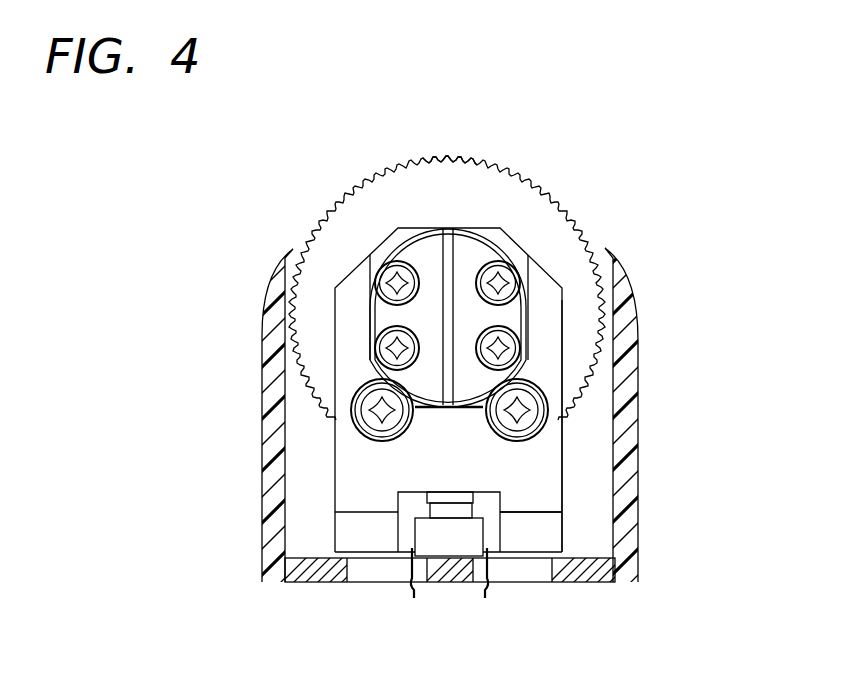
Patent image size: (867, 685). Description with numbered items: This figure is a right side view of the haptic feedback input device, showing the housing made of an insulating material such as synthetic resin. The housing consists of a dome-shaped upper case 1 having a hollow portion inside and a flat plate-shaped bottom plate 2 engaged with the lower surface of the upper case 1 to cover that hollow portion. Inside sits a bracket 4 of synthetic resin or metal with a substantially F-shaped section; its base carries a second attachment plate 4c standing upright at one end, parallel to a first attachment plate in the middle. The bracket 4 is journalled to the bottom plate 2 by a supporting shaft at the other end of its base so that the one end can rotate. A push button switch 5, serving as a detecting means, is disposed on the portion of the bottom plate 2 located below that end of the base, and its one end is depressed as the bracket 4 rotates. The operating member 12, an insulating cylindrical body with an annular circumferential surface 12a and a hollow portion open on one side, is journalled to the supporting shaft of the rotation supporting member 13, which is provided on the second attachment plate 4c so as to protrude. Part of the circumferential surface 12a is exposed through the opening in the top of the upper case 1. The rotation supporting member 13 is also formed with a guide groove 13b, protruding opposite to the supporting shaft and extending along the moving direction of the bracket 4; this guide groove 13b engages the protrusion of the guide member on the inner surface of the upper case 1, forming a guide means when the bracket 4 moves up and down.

The upper case 1 is at (264, 464).
The bottom plate 2 is at (335, 584).
The bracket 4 is at (332, 499).
The second attachment plate 4c is at (535, 475).
The push button switch 5 is at (453, 541).
The operating member 12 is at (557, 197).
The annular circumferential surface 12a is at (475, 158).
The rotation supporting member 13 is at (378, 257).
The guide groove 13b is at (445, 285).